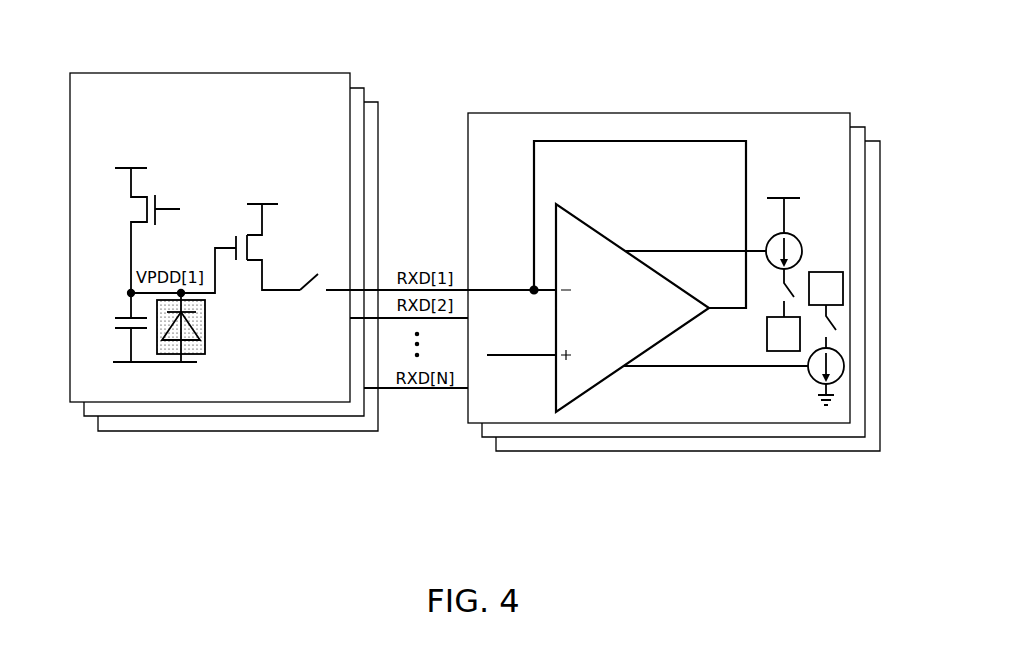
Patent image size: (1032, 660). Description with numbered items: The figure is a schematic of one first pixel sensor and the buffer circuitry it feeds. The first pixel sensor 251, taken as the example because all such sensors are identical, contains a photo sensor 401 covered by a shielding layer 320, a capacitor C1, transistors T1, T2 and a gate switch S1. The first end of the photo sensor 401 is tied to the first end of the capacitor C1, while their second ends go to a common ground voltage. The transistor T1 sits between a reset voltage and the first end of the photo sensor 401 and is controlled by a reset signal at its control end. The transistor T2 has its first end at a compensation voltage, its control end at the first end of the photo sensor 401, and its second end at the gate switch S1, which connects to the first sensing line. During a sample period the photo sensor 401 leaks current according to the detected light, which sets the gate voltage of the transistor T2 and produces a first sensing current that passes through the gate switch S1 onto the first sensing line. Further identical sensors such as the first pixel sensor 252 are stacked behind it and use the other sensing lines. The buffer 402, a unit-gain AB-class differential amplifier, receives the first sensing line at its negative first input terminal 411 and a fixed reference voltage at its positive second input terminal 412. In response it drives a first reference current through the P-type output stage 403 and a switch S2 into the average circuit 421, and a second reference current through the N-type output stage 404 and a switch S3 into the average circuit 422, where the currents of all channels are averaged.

The first pixel sensor 251 is at (152, 73).
The first pixel sensor 252 is at (354, 88).
The shielding layer 320 is at (205, 347).
The photo sensor 401 is at (199, 329).
The buffer 402 is at (614, 240).
The P-type output stage 403 is at (802, 244).
The N-type output stage 404 is at (843, 355).
The first input terminal 411 is at (496, 289).
The second input terminal 412 is at (517, 357).
The average circuit 421 is at (767, 333).
The average circuit 422 is at (843, 288).
The transistor T1 is at (143, 197).
The transistor T2 is at (256, 234).
The capacitor C1 is at (122, 316).
The gate switch S1 is at (304, 291).
The switch S2 is at (778, 285).
The switch S3 is at (836, 324).